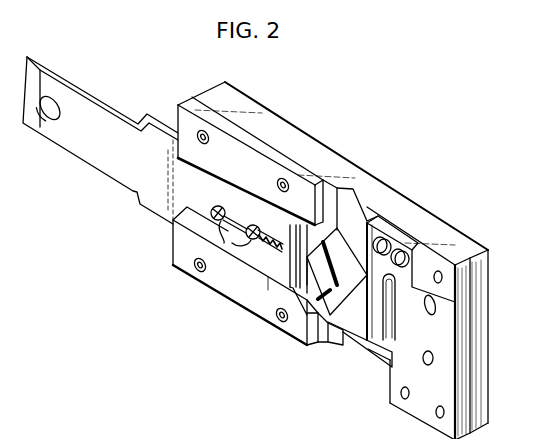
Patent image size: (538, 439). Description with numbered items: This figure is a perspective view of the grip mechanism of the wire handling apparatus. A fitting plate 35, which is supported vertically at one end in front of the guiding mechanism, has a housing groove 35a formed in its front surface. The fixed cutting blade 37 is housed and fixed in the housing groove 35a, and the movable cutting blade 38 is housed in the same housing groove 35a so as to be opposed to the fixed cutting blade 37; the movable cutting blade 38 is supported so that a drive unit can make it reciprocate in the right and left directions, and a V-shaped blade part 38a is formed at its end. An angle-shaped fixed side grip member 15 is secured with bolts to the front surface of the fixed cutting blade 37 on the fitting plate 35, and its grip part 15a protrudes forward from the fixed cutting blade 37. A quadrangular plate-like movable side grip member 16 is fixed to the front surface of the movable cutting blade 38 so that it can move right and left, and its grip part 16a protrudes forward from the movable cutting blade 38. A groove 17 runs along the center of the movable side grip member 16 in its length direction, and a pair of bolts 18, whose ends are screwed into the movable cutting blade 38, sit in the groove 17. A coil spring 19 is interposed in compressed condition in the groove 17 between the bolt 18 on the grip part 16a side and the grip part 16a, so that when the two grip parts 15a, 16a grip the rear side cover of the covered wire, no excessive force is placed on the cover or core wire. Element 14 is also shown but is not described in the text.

The lower block 14 is at (200, 235).
The fixed side grip member 15 is at (393, 232).
The grip part 15a is at (390, 278).
The movable side grip member 16 is at (195, 177).
The grip part 16a is at (299, 226).
The groove 17 is at (221, 220).
The bolts 18 is at (222, 245).
The coil spring 19 is at (268, 277).
The fitting plate 35 is at (450, 232).
The housing groove 35a is at (467, 332).
The fixed cutting blade 37 is at (452, 375).
The movable cutting blade 38 is at (335, 220).
The V-shaped blade part 38a is at (315, 303).